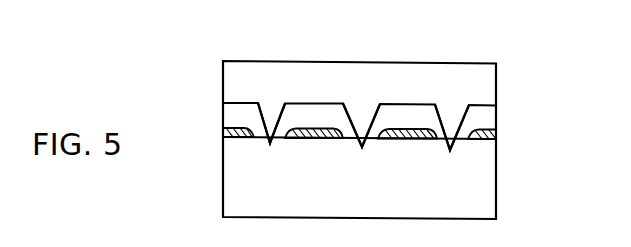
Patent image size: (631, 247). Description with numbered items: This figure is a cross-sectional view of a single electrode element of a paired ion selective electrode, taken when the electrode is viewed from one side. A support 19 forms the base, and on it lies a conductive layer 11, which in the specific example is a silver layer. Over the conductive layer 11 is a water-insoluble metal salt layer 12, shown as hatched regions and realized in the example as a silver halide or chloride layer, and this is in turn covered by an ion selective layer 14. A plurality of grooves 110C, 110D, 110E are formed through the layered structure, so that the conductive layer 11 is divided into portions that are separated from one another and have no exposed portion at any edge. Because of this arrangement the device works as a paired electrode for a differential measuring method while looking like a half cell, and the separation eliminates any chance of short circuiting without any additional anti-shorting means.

The support 19 is at (480, 200).
The conductive layer 11 is at (498, 140).
The water-insoluble metal salt layer 12 is at (489, 128).
The ion selective layer 14 is at (491, 94).
The groove 110C is at (272, 112).
The groove 110D is at (361, 113).
The groove 110E is at (449, 120).